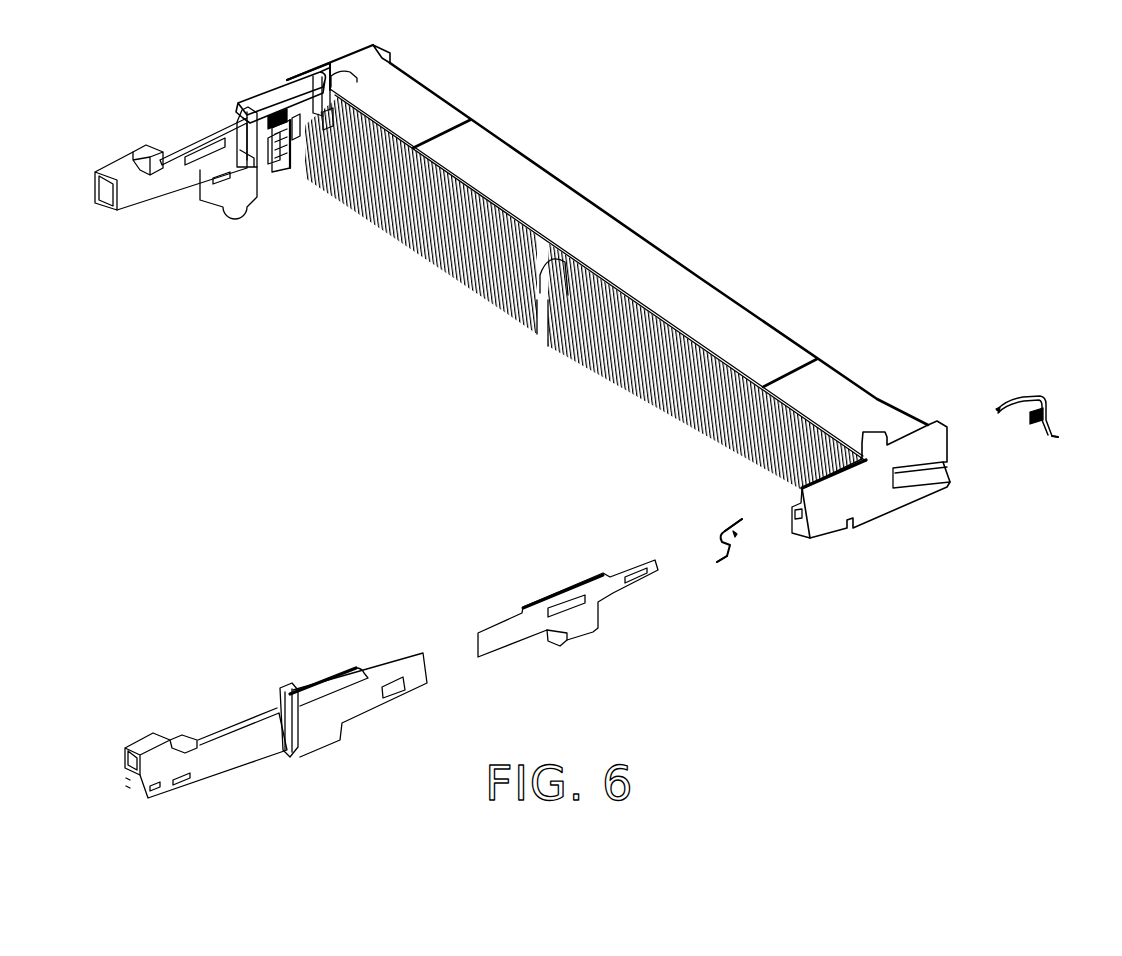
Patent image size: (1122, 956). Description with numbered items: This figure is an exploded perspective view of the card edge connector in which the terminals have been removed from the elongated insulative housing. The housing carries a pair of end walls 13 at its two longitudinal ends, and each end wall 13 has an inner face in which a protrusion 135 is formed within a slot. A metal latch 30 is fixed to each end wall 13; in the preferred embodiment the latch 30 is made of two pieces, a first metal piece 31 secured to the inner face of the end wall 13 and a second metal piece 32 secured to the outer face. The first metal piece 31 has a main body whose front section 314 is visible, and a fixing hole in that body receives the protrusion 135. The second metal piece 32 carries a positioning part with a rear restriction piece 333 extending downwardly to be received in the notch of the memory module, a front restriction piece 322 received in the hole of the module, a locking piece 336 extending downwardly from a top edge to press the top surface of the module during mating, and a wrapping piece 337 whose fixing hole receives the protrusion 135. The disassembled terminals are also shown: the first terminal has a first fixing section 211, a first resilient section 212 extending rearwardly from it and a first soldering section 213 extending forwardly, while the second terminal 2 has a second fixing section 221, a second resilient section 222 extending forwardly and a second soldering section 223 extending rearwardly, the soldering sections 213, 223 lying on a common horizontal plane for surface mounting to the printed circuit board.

The retention clip 2 is at (1016, 430).
The end wall 13 is at (823, 523).
The protrusion 135 is at (284, 127).
The metal latch 30 is at (391, 656).
The first metal piece 31 is at (563, 598).
The second metal piece 32 is at (272, 663).
The first fixing section 211 is at (737, 535).
The first resilient section 212 is at (743, 510).
The first soldering section 213 is at (717, 560).
The second fixing section 221 is at (1047, 407).
The second resilient section 222 is at (997, 412).
The second soldering section 223 is at (1055, 435).
The front section 314 is at (158, 177).
The front restriction piece 322 is at (292, 160).
The rear restriction piece 333 is at (293, 92).
The locking piece 336 is at (152, 157).
The wrapping piece 337 is at (277, 112).